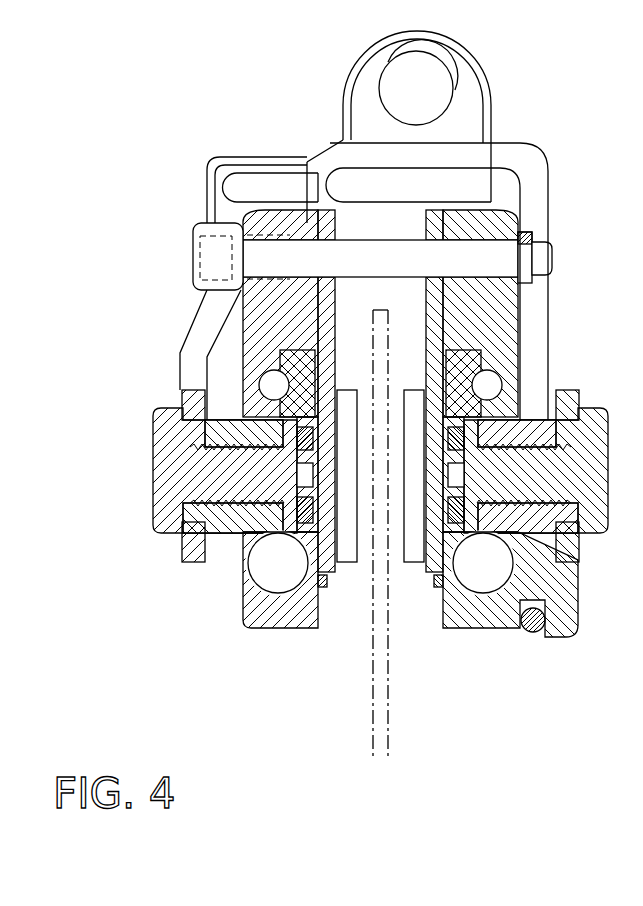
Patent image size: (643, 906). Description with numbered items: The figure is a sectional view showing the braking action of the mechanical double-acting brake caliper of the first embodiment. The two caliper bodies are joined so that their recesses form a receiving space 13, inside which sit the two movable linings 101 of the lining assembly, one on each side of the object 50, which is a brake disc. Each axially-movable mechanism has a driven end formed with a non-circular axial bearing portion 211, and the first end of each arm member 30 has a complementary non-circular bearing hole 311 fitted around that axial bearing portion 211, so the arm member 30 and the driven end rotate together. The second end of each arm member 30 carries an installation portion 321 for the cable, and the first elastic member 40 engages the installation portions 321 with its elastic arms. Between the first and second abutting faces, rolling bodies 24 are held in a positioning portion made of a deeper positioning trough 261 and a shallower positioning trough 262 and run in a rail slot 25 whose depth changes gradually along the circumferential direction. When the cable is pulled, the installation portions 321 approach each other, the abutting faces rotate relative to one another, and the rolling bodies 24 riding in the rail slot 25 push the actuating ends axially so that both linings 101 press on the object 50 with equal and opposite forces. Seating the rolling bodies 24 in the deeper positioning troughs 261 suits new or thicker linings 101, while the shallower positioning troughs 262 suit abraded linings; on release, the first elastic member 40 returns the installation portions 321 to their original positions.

The installation portion 321 is at (455, 62).
The first elastic member 40 is at (530, 172).
The receiving space 13 is at (412, 328).
The rail slot 25 is at (258, 358).
The shallower positioning trough 262 is at (260, 377).
The arm member 30 is at (195, 378).
The bearing hole 311 is at (157, 417).
The axial bearing portion 211 is at (160, 538).
The rolling body 24 is at (273, 555).
The deeper positioning trough 261 is at (282, 575).
The lining 101 is at (418, 555).
The object 50 is at (380, 712).